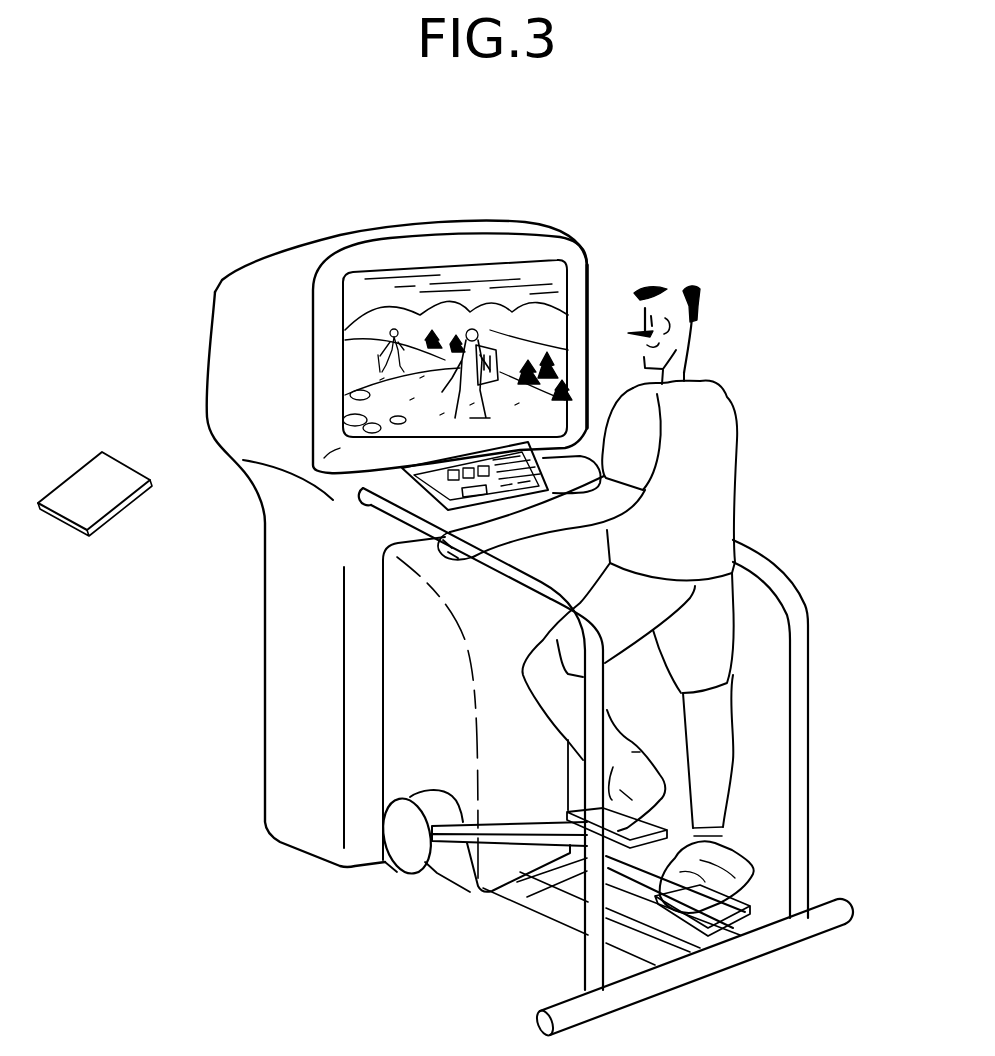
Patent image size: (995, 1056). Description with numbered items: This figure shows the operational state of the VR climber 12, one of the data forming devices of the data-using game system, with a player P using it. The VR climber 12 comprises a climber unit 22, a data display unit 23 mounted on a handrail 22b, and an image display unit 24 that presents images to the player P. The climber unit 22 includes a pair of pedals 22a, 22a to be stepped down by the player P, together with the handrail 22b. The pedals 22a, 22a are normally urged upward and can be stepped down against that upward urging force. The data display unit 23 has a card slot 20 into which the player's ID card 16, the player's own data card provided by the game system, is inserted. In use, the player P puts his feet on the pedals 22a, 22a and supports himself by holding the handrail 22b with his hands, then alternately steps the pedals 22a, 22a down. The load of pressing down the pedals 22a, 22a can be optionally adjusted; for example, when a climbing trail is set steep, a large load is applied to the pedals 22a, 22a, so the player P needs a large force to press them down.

The VR climber 12 is at (686, 210).
The ID card 16 is at (85, 463).
The card slot 20 is at (468, 496).
The climber unit 22 is at (340, 930).
The pedals 22a is at (468, 847).
The handrail 22b is at (772, 562).
The data display unit 23 is at (421, 490).
The image display unit 24 is at (455, 220).
The player P is at (713, 430).